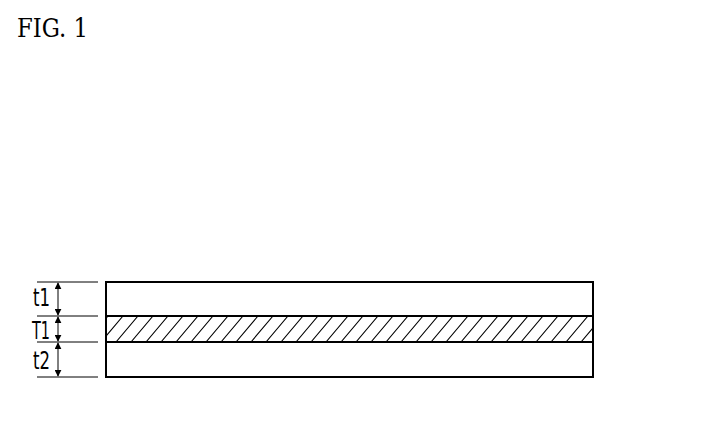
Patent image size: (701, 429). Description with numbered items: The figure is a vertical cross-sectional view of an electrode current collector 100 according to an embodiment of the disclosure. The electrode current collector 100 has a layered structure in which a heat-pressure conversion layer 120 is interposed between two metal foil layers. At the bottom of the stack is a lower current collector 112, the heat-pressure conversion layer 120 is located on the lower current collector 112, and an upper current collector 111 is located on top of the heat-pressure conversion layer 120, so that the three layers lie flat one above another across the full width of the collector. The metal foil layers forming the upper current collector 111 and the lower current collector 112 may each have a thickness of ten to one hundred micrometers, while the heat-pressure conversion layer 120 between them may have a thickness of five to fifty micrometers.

The electrode current collector 100 is at (305, 193).
The upper current collector 111 is at (587, 288).
The heat-pressure conversion layer 120 is at (587, 325).
The lower current collector 112 is at (587, 369).